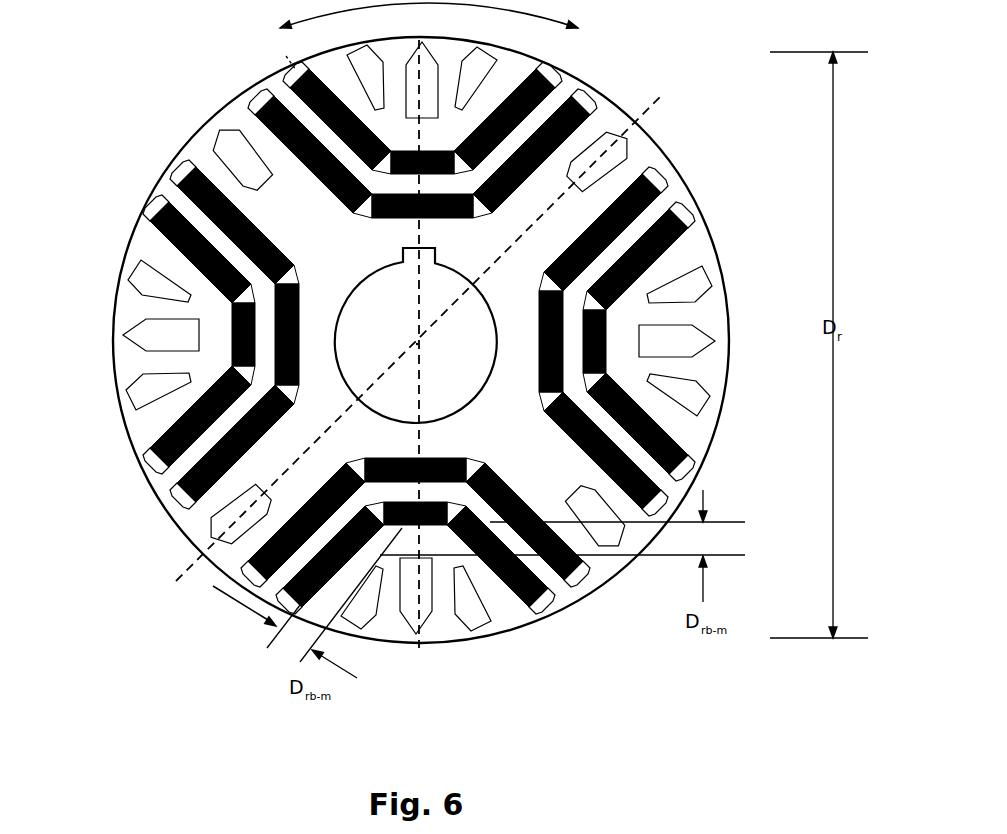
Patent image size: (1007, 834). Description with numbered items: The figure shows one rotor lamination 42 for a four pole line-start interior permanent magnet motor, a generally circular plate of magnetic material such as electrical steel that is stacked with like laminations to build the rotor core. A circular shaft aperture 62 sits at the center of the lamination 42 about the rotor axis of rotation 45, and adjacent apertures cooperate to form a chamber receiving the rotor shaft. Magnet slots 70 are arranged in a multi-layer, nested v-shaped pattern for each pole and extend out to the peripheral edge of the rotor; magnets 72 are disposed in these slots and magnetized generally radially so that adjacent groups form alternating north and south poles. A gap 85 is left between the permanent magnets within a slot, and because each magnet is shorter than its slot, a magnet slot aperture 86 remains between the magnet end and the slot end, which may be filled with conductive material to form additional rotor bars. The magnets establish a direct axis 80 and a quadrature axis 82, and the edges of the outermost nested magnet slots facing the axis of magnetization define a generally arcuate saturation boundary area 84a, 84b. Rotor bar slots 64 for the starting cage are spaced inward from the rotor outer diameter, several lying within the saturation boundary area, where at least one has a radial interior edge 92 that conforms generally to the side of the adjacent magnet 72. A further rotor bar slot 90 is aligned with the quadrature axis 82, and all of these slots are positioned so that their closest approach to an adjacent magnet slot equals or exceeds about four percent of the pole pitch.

The rotor lamination 42 is at (116, 106).
The rotor axis of rotation 45 is at (417, 345).
The shaft aperture 62 is at (358, 282).
The rotor bar slots 64 is at (494, 66).
The magnet slots 70 is at (657, 175).
The magnets 72 is at (250, 211).
The direct axis 80 is at (421, 343).
The quadrature axis 82 is at (420, 351).
The saturation boundary area 84a is at (436, 29).
The saturation boundary area 84b is at (261, 331).
The gap 85 is at (351, 464).
The magnet slot aperture 86 is at (263, 108).
The rotor bar slot 90 is at (627, 142).
The radial interior edge 92 is at (200, 333).